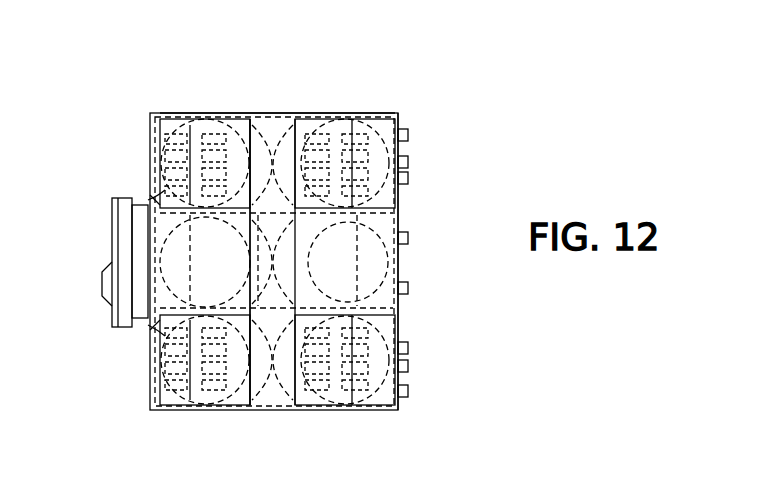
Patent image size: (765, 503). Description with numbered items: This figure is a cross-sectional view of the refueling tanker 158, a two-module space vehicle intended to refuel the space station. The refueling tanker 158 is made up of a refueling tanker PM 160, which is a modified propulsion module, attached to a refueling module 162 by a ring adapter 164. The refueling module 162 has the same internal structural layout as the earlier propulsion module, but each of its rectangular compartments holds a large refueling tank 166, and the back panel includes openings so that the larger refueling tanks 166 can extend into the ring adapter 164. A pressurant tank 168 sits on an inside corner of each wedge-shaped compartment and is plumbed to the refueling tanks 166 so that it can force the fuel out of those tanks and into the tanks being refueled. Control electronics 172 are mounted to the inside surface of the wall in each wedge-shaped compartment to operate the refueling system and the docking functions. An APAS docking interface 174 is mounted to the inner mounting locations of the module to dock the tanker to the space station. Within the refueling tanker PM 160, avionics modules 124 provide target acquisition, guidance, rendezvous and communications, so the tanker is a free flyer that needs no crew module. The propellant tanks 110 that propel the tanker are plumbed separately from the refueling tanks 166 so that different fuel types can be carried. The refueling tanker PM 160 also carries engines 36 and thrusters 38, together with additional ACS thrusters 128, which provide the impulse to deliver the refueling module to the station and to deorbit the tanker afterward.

The refueling tanker 158 is at (470, 140).
The refueling tanker PM 160 is at (388, 98).
The refueling module 162 is at (247, 98).
The ring adapter 164 is at (287, 410).
The refueling tank 166 is at (277, 110).
The pressurant tank 168 is at (160, 196).
The control electronics 172 is at (218, 137).
The APAS docking interface 174 is at (90, 200).
The avionics module 124 is at (330, 110).
The ACS thruster 128 is at (325, 425).
The propellant tank 110 is at (408, 238).
The engine 36 is at (408, 288).
The thruster 38 is at (408, 346).